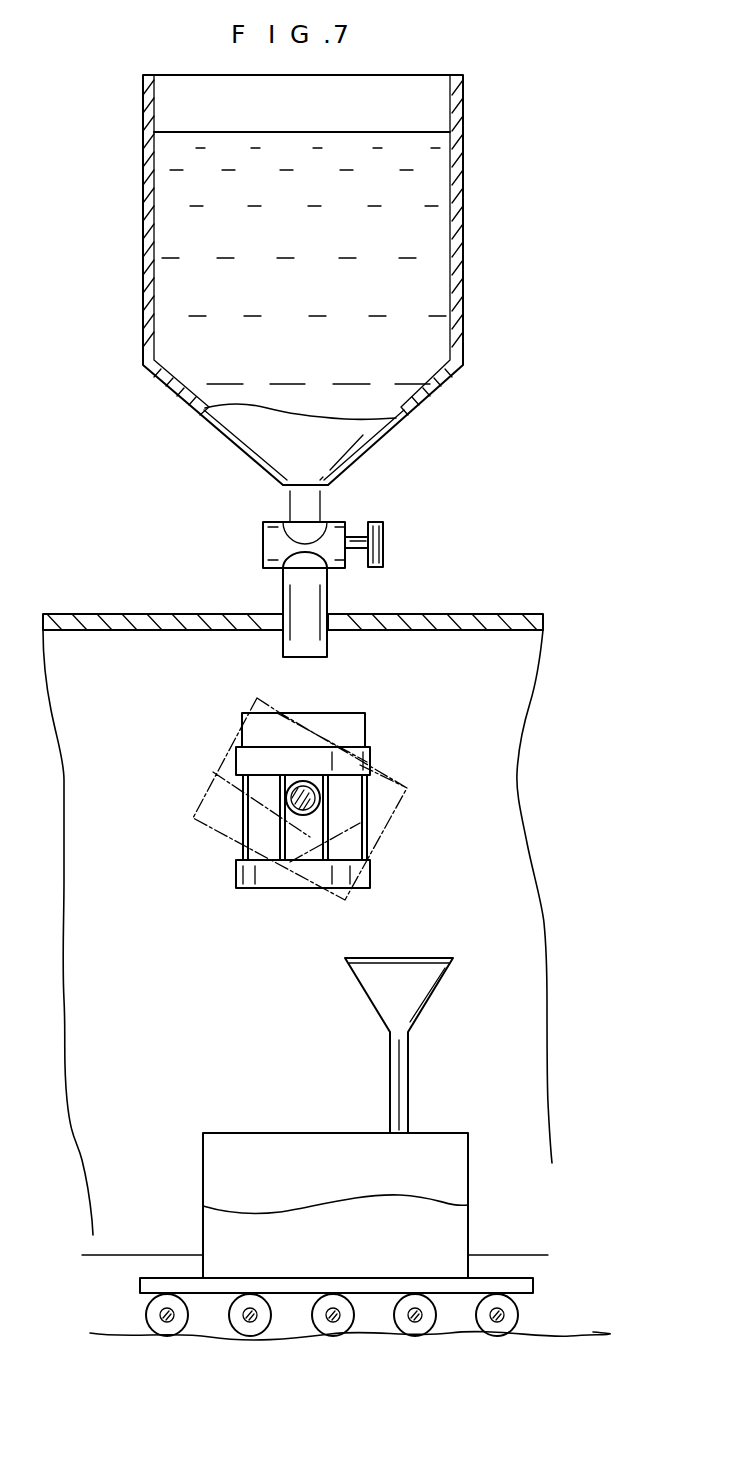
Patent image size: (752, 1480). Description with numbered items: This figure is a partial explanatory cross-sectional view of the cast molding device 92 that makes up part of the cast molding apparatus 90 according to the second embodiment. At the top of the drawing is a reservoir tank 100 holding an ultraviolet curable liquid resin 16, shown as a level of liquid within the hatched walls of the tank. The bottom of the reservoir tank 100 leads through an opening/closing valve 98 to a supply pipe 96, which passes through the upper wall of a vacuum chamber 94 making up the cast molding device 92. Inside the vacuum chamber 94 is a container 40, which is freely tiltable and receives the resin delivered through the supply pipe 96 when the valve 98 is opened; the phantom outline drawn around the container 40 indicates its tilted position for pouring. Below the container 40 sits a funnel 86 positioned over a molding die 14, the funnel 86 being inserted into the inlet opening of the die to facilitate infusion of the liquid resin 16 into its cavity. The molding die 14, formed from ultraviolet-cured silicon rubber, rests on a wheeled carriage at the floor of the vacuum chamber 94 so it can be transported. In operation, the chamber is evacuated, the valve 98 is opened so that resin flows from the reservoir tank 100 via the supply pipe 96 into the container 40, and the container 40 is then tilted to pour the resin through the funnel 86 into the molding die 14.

The molding die 14 is at (230, 1133).
The ultraviolet curable liquid resin 16 is at (428, 352).
The container 40 is at (358, 728).
The funnel 86 is at (438, 958).
The cast molding apparatus 90 is at (600, 302).
The cast molding device 92 is at (498, 593).
The vacuum chamber 94 is at (444, 613).
The supply pipe 96 is at (296, 600).
The opening/closing valve 98 is at (273, 542).
The reservoir tank 100 is at (463, 194).